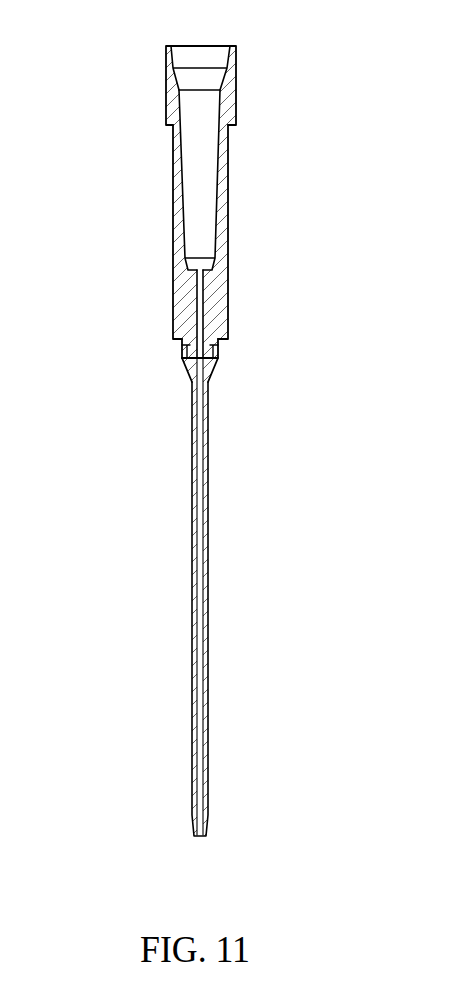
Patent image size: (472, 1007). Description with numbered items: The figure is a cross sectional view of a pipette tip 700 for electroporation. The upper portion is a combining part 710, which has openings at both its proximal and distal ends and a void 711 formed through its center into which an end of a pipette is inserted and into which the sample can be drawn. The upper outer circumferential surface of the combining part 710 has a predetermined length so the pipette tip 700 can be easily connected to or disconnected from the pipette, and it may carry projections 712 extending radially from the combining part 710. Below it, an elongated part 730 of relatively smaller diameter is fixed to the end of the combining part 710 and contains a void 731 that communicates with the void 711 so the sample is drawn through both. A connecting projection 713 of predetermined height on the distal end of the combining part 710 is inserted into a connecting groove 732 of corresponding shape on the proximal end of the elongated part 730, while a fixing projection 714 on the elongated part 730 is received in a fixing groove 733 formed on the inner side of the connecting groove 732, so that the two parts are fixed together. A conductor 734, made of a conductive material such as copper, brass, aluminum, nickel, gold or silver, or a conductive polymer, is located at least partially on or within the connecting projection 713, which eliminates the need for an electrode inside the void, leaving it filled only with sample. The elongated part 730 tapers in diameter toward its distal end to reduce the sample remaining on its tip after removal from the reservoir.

The pipette tip 700 is at (204, 419).
The combining part 710 is at (201, 236).
The void 711 is at (198, 199).
The projections 712 is at (170, 111).
The connecting projection 713 is at (212, 373).
The fixing projection 714 is at (174, 348).
The elongated part 730 is at (199, 597).
The void 731 is at (200, 600).
The connecting groove 732 is at (193, 338).
The fixing groove 733 is at (222, 350).
The conductor 734 is at (182, 361).